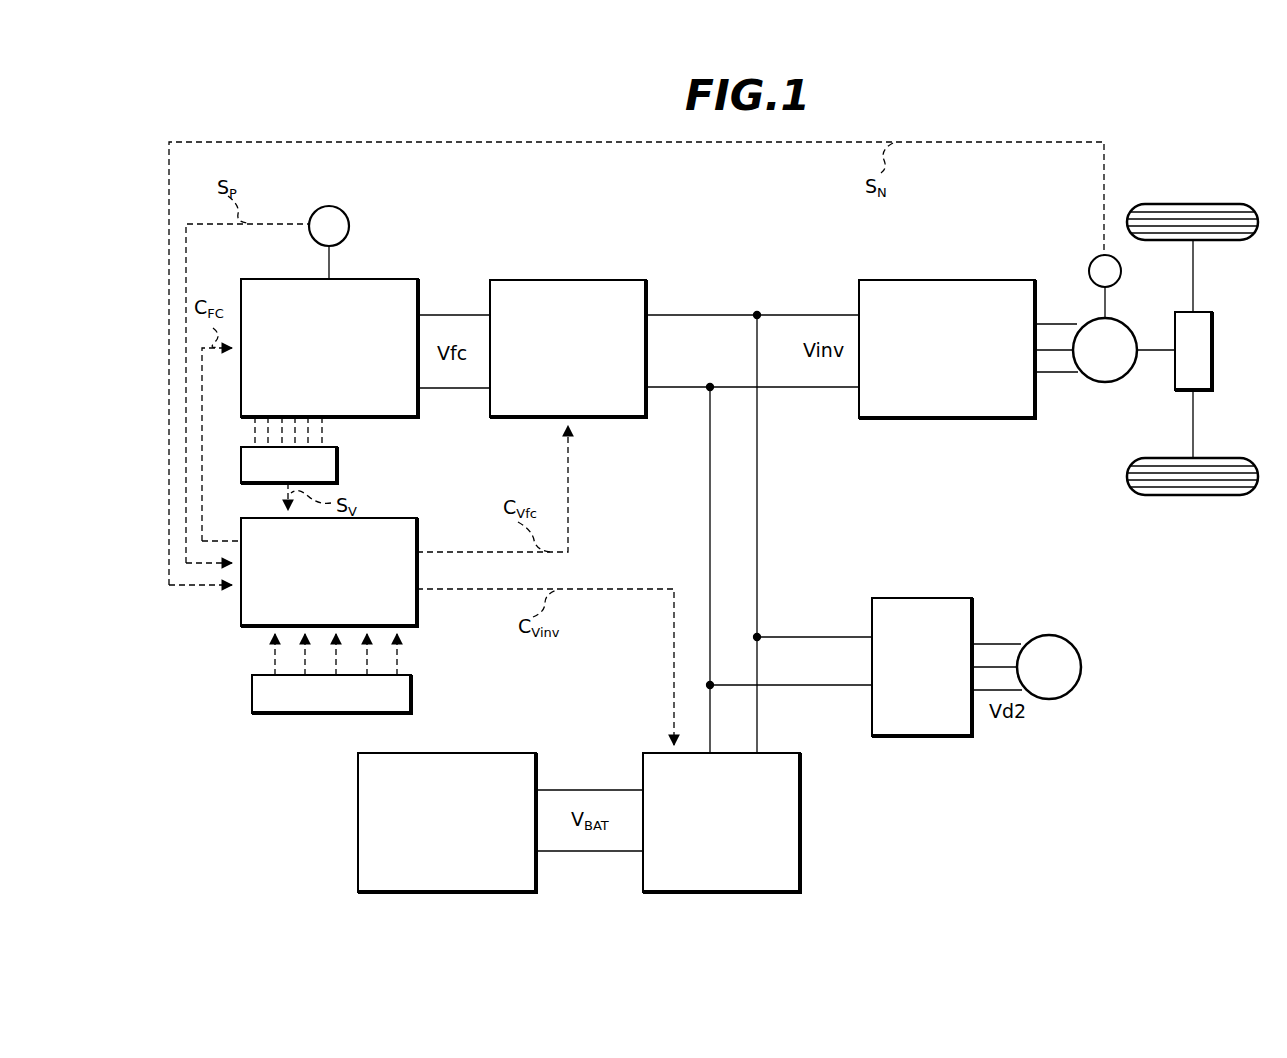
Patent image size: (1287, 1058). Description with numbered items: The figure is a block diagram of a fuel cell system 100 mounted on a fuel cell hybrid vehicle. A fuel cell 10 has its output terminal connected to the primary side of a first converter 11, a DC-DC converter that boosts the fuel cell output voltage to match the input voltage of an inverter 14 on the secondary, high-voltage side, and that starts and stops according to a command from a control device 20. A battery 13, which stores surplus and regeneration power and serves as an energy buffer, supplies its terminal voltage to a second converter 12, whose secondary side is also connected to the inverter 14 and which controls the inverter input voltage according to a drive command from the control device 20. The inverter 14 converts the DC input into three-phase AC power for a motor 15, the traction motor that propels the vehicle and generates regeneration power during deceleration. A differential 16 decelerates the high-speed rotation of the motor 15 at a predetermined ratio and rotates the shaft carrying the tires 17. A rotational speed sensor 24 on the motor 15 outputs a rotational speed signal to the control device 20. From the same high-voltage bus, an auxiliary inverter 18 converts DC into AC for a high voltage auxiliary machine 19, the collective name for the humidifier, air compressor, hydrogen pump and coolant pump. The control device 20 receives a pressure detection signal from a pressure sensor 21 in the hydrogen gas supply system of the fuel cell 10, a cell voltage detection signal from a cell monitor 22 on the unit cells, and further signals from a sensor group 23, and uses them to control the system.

The fuel cell 10 is at (395, 278).
The first converter 11 is at (566, 279).
The second converter 12 is at (800, 817).
The battery 13 is at (500, 752).
The inverter 14 is at (998, 279).
The motor 15 is at (1105, 382).
The differential 16 is at (1200, 311).
The tire 17 is at (1195, 203).
The auxiliary inverter 18 is at (953, 597).
The high voltage auxiliary machine 19 is at (1065, 638).
The control device 20 is at (393, 517).
The pressure sensor 21 is at (349, 225).
The cell monitor 22 is at (337, 462).
The sensor group 23 is at (411, 693).
The rotational speed sensor 24 is at (1107, 255).
The fuel cell system 100 is at (996, 876).